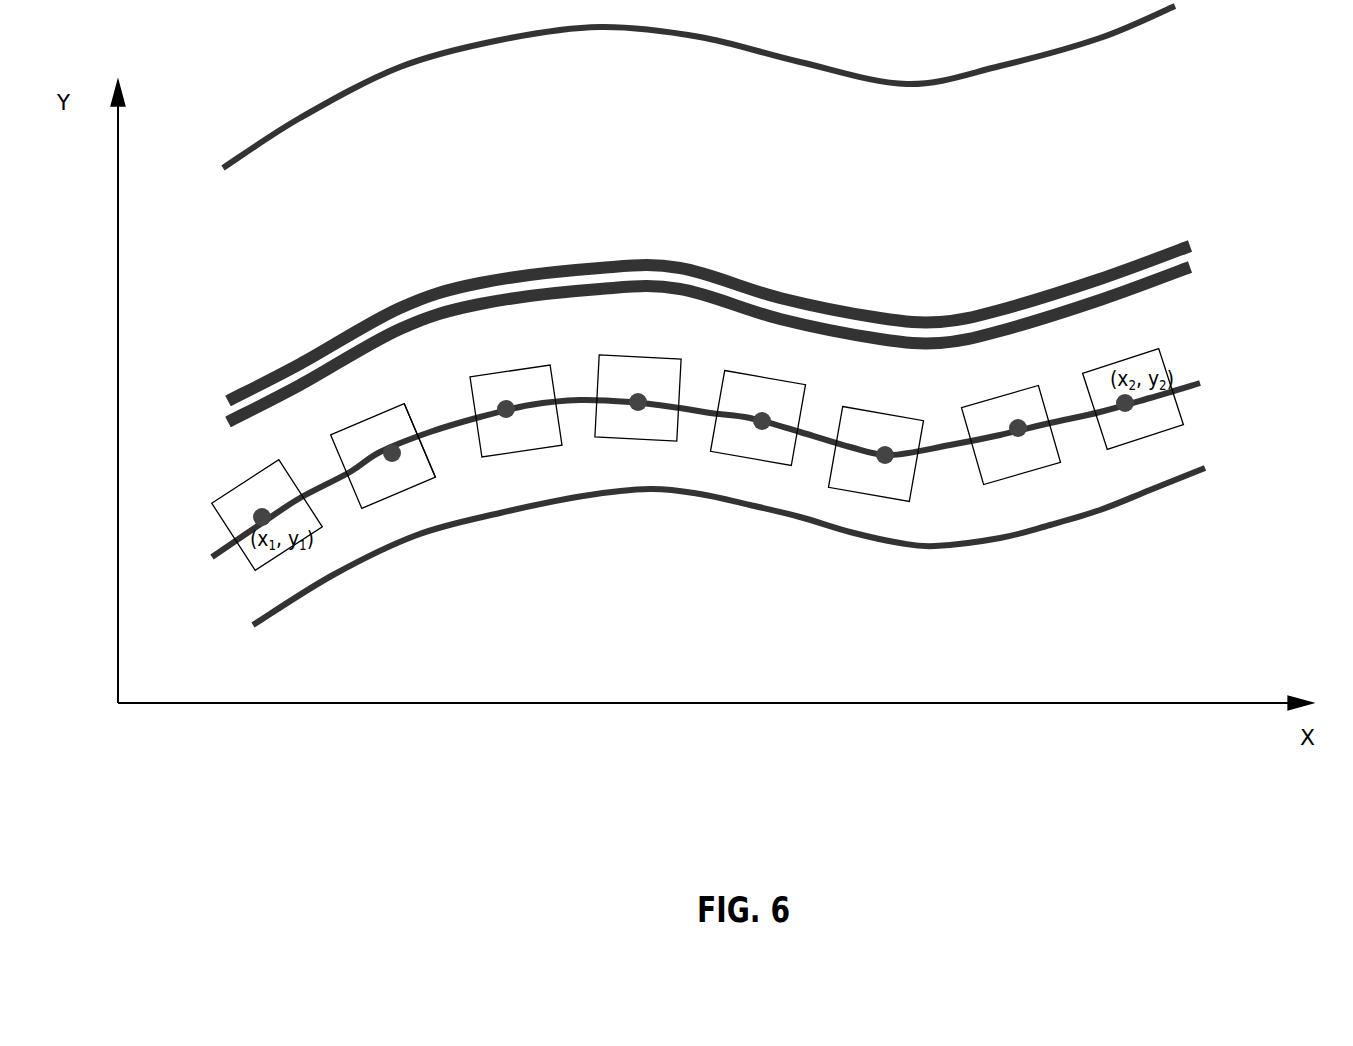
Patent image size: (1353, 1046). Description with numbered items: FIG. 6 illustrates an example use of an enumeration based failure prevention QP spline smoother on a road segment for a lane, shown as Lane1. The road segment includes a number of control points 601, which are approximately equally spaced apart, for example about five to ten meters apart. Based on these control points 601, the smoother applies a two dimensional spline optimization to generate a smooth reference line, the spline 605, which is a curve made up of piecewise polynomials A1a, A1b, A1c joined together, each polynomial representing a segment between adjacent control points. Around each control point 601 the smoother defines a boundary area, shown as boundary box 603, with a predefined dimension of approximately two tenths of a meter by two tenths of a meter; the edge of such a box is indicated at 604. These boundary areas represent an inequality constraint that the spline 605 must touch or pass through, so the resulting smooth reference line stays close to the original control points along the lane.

The control points 601 is at (390, 452).
The boundary box 603 is at (383, 483).
The boundary of region 604 is at (430, 483).
The spline 605 is at (698, 414).
The polynomial A1a is at (320, 475).
The polynomial A1b is at (452, 412).
The polynomial A1c is at (577, 394).
The lane Lane1 is at (1213, 379).